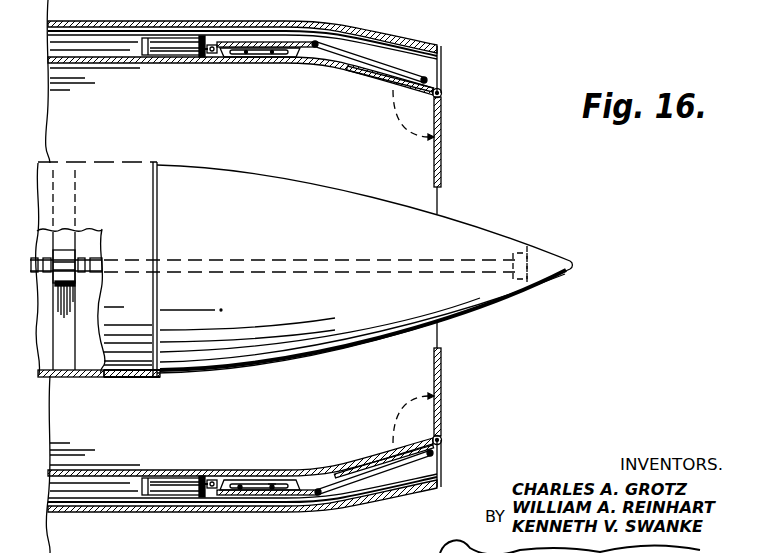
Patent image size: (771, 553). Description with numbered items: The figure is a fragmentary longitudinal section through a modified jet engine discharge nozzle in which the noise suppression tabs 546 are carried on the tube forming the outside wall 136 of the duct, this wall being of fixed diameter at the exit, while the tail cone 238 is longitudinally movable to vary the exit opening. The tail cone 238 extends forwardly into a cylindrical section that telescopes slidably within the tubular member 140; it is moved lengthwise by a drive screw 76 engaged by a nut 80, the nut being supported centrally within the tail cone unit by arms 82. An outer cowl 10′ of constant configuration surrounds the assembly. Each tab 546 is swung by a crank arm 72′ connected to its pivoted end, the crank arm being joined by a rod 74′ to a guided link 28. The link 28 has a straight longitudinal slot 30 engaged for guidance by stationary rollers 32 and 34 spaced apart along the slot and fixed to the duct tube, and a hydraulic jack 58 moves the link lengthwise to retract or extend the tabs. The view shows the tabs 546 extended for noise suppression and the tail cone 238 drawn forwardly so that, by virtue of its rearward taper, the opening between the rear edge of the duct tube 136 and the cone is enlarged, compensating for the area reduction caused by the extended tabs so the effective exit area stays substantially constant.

The outer cowl 10′ is at (90, 5).
The guided link 28 is at (292, 44).
The longitudinal slot 30 is at (277, 55).
The stationary roller 32 is at (239, 483).
The stationary roller 34 is at (277, 482).
The hydraulic jack 58 is at (156, 48).
The crank arm 72′ is at (443, 91).
The rod 74′ is at (367, 60).
The drive screw 76 is at (93, 259).
The nut 80 is at (52, 283).
The arms 82 is at (63, 333).
The outside wall 136 is at (229, 64).
The tubular member 140 is at (84, 378).
The tail cone 238 is at (488, 236).
The tabs 546 is at (441, 152).